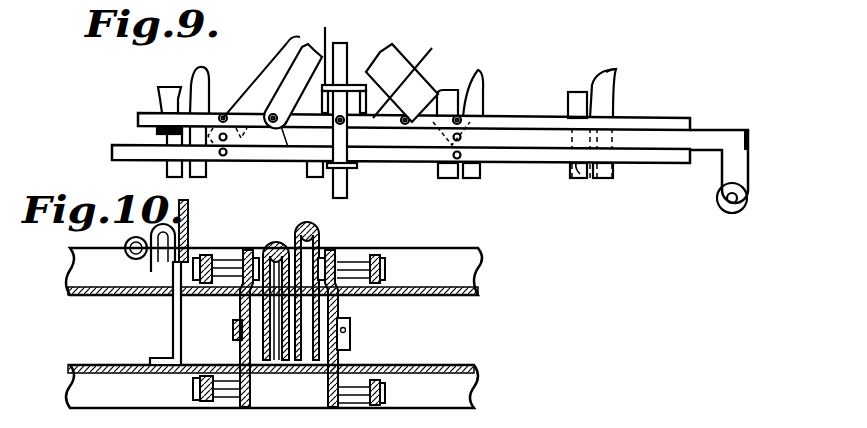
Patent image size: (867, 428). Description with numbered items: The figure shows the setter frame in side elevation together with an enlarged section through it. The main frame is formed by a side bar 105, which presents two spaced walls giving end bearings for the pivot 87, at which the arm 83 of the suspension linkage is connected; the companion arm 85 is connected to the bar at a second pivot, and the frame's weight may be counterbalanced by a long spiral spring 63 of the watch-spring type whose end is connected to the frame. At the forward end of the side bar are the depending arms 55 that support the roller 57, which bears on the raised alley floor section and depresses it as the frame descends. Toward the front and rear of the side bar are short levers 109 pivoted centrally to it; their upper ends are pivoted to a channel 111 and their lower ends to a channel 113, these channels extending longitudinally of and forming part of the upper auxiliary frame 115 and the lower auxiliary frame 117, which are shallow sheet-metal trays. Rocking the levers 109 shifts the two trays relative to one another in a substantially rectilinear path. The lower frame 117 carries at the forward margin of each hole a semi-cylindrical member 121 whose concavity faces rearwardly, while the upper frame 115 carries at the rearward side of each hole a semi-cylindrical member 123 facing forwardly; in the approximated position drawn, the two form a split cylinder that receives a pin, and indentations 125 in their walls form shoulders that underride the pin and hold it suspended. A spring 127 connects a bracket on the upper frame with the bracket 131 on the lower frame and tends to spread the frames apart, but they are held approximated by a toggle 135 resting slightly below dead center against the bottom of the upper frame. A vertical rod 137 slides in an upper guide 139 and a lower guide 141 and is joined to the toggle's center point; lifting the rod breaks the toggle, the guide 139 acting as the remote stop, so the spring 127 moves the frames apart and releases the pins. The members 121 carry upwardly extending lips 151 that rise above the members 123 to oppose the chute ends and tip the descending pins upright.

In FIG. 9, the depending arms 55 is at (742, 167).
In FIG. 9, the roller 57 is at (747, 204).
In FIG. 9, the spiral spring 63 is at (324, 45).
In FIG. 9, the arm 83 is at (268, 78).
In FIG. 10, the arm 83 is at (272, 258).
In FIG. 9, the arm 85 is at (408, 82).
In FIG. 10, the arm 85 is at (318, 234).
In FIG. 10, the pivot 87 is at (236, 336).
In FIG. 9, the side bar 105 is at (530, 142).
In FIG. 10, the side bar 105 is at (340, 355).
In FIG. 9, the short lever 109 is at (238, 155).
In FIG. 10, the short lever 109 is at (242, 298).
In FIG. 10, the channel 111 is at (208, 260).
In FIG. 10, the channel 113 is at (193, 388).
In FIG. 9, the upper auxiliary frame 115 is at (676, 122).
In FIG. 10, the upper auxiliary frame 115 is at (454, 295).
In FIG. 9, the lower auxiliary frame 117 is at (670, 163).
In FIG. 10, the lower auxiliary frame 117 is at (455, 367).
In FIG. 9, the semi-cylindrical member 121 is at (614, 100).
In FIG. 9, the semi-cylindrical member 123 is at (566, 98).
In FIG. 9, the indentation 125 is at (594, 172).
In FIG. 10, the spring 127 is at (134, 257).
In FIG. 10, the bracket 131 is at (172, 311).
In FIG. 9, the toggle 135 is at (404, 54).
In FIG. 10, the toggle 135 is at (188, 213).
In FIG. 9, the vertical rod 137 is at (347, 57).
In FIG. 9, the upper guide 139 is at (287, 43).
In FIG. 9, the lower guide 141 is at (352, 170).
In FIG. 9, the lip 151 is at (617, 70).